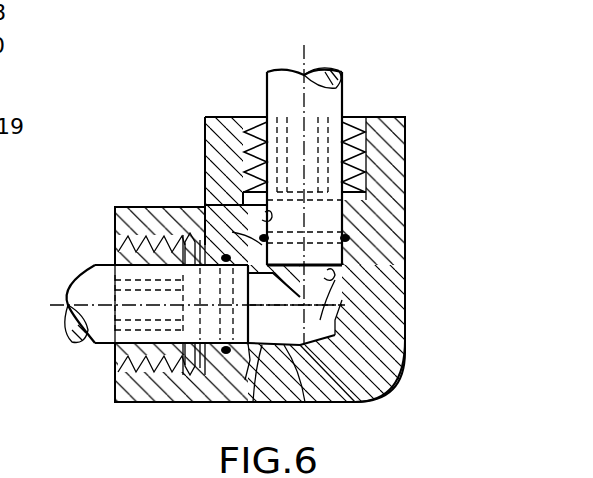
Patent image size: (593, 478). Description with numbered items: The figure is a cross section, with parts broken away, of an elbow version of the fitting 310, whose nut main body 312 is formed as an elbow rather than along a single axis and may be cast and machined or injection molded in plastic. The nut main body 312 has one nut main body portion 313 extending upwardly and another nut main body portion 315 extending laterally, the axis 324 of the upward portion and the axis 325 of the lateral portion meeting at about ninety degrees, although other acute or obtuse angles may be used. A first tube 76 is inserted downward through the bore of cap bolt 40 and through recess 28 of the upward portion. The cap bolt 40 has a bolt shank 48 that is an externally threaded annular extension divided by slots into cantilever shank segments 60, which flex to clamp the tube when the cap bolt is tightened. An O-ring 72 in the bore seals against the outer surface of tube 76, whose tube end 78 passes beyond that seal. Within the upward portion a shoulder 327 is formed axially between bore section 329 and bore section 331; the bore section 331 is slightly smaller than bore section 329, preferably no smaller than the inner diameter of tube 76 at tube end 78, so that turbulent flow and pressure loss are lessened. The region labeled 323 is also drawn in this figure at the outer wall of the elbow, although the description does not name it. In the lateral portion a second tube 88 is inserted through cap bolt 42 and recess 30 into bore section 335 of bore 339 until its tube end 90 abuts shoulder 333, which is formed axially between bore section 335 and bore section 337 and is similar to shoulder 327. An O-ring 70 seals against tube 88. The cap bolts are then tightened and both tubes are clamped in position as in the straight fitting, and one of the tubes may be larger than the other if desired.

The tube 76 is at (288, 65).
The axis 324 is at (312, 63).
The cap bolt 40 is at (259, 113).
The shank segments 60 is at (246, 118).
The nut main body portion 313 is at (222, 132).
The fitting 310 is at (405, 99).
The bolt shank 48 is at (357, 120).
The recess 28 is at (356, 193).
The O-ring 72 is at (350, 238).
The bore section 329 is at (262, 216).
The bore section 335 is at (230, 236).
The cap bolt 42 is at (116, 253).
The tube 88 is at (66, 299).
The axis 325 is at (68, 326).
The shoulder 327 is at (338, 250).
The bore section 331 is at (332, 282).
The tube end 78 is at (385, 327).
The body wall 323 is at (385, 332).
The nut main body 312 is at (408, 364).
The bore section 337 is at (367, 397).
The bore 339 is at (268, 355).
The shoulder 333 is at (252, 360).
The O-ring 70 is at (213, 380).
The recess 30 is at (198, 372).
The nut main body portion 315 is at (128, 402).
The tube end 90 is at (296, 309).